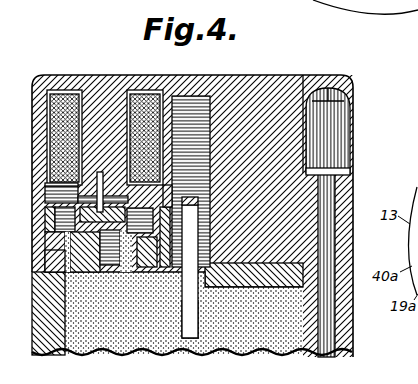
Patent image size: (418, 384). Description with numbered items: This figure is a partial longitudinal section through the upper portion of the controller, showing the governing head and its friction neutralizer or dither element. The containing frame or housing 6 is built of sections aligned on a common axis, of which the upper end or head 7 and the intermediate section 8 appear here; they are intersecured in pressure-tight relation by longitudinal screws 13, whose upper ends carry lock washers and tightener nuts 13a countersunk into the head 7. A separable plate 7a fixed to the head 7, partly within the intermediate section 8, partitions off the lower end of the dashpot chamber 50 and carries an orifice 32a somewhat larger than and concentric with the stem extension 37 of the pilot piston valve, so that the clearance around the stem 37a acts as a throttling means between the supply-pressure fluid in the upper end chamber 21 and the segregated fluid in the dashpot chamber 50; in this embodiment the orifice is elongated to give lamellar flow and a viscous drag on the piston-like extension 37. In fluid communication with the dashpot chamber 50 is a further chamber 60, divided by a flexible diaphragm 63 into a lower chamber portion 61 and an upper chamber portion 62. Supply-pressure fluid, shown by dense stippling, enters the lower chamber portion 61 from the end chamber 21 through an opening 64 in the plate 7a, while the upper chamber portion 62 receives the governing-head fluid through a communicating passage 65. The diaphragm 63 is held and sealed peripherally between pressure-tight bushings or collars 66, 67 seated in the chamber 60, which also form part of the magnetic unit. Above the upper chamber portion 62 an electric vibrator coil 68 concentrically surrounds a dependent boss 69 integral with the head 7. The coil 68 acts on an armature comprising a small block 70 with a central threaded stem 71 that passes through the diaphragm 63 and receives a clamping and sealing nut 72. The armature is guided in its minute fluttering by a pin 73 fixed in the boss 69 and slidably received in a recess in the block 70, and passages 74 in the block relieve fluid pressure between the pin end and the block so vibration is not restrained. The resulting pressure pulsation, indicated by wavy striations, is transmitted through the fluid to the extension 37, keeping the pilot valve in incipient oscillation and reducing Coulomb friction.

The containing frame or housing 6 is at (363, 97).
The upper end or head 7 is at (34, 152).
The separable plate 7a is at (285, 283).
The intermediate section 8 is at (32, 326).
The longitudinal screw 13 is at (330, 247).
The tightener nut 13a is at (342, 138).
The upper end chamber 21 is at (153, 352).
The orifice 32a is at (254, 275).
The stem extension 37 is at (194, 197).
The stem 37a is at (184, 318).
The dashpot chamber 50 is at (192, 107).
The chamber 60 is at (45, 192).
The lower chamber portion 61 is at (84, 276).
The upper chamber portion 62 is at (45, 205).
The flexible diaphragm 63 is at (57, 236).
The opening 64 is at (150, 282).
The communicating passage 65 is at (143, 177).
The pressure-tight bushing or collar 66 is at (55, 274).
The pressure-tight bushing or collar 67 is at (45, 213).
The electric vibrator coil 68 is at (47, 163).
The dependent boss 69 is at (98, 90).
The block 70 is at (120, 200).
The threaded stem 71 is at (117, 276).
The clamping and sealing nut 72 is at (104, 288).
The pin 73 is at (166, 158).
The passage 74 is at (61, 196).